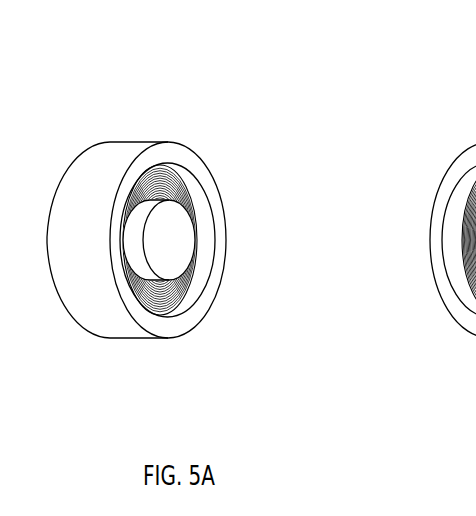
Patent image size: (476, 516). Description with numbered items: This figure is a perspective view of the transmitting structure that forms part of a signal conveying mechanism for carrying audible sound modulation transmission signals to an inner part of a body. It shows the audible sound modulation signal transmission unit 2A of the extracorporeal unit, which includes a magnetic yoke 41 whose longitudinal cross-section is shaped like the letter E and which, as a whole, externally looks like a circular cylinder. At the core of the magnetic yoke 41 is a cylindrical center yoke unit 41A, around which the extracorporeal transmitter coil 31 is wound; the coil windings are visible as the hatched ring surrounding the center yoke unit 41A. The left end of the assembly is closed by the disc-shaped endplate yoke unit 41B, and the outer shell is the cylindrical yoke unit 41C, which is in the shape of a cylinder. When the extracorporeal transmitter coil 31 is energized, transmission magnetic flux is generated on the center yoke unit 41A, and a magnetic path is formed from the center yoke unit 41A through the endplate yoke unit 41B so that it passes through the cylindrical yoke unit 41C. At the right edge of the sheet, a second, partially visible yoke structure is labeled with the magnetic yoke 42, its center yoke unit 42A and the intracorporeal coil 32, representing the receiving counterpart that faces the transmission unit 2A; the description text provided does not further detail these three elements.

The audible sound modulation signal transmission unit 2A is at (135, 68).
The magnetic yoke 41 is at (127, 158).
The center yoke unit 41A is at (168, 243).
The endplate yoke unit 41B is at (55, 283).
The cylindrical yoke unit 41C is at (188, 164).
The extracorporeal transmitter coil 31 is at (172, 183).
The magnetic yoke 42 is at (439, 244).
The center yoke unit 42A is at (475, 330).
The intracorporeal receiver coil 32 is at (475, 190).